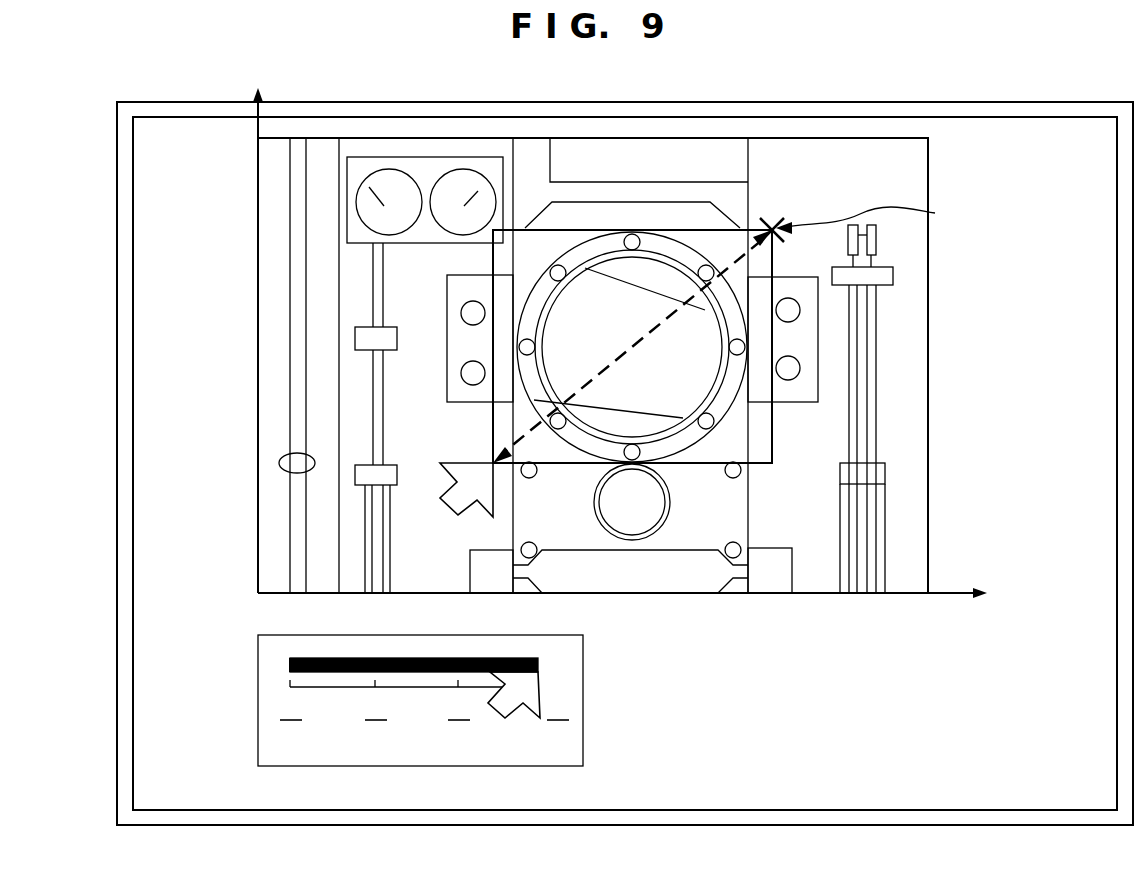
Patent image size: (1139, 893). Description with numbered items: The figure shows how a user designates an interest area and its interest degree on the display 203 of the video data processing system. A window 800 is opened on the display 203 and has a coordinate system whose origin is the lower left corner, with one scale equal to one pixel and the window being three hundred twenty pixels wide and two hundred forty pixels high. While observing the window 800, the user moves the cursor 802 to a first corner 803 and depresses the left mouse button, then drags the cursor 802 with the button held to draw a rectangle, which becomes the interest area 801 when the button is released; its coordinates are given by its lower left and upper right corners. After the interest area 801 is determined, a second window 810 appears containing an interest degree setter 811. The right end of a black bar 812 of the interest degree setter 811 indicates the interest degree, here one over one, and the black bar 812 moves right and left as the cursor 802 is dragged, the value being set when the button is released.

The display 203 is at (548, 825).
The window 800 is at (928, 385).
The interest area 801 is at (772, 440).
The cursor 802 is at (510, 766).
The corner 803 is at (771, 226).
The window 810 is at (583, 688).
The interest degree setter 811 is at (540, 661).
The black bar 812 is at (405, 658).